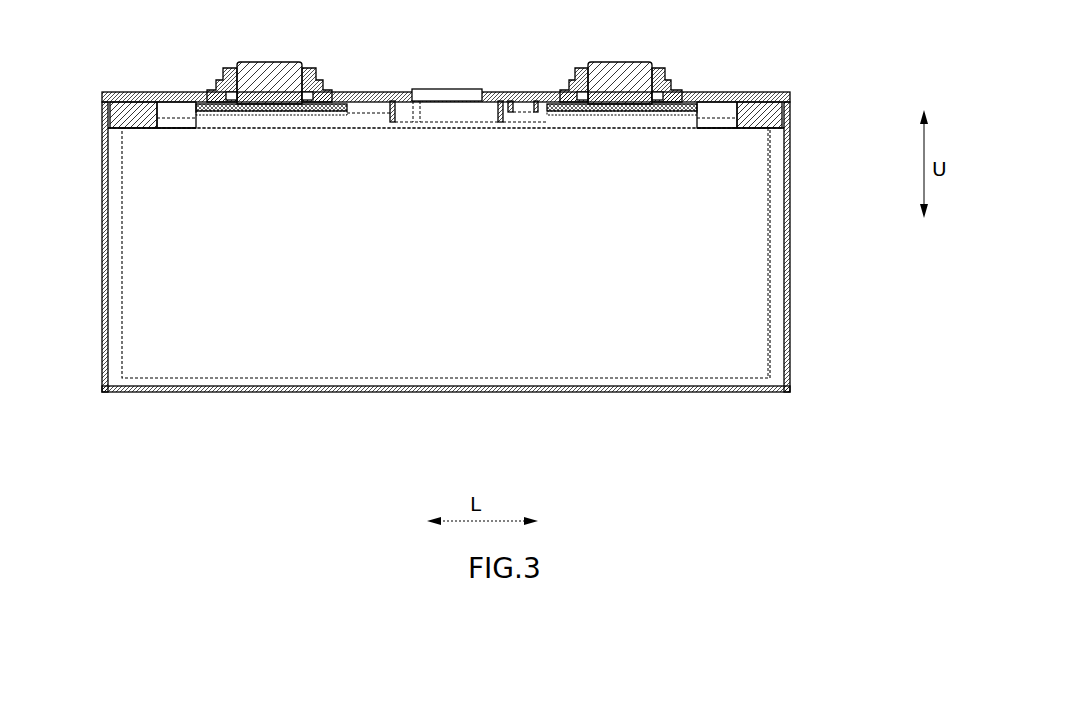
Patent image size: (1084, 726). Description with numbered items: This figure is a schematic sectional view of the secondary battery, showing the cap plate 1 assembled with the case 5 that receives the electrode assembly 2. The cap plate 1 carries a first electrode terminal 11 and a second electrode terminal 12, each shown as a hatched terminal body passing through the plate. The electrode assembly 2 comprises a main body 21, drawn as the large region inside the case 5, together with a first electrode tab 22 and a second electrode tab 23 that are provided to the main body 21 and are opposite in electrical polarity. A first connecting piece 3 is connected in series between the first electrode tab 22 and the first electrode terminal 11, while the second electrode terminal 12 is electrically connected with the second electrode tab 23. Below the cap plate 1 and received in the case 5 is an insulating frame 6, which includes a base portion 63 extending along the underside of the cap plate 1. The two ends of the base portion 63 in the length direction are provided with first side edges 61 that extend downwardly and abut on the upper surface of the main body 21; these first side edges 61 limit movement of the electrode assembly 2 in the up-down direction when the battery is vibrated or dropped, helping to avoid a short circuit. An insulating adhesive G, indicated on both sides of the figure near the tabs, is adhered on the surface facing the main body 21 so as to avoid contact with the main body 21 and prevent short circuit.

The cap plate 1 is at (168, 92).
The electrode assembly 2 is at (110, 262).
The first connecting piece 3 is at (560, 92).
The case 5 is at (788, 318).
The insulating frame 6 is at (445, 197).
The first electrode terminal 11 is at (606, 62).
The second electrode terminal 12 is at (250, 62).
The main body 21 is at (663, 270).
The first electrode tab 22 is at (655, 112).
The second electrode tab 23 is at (240, 112).
The first side edge 61 is at (112, 117).
The base portion 63 is at (700, 92).
The insulating adhesive G is at (290, 112).